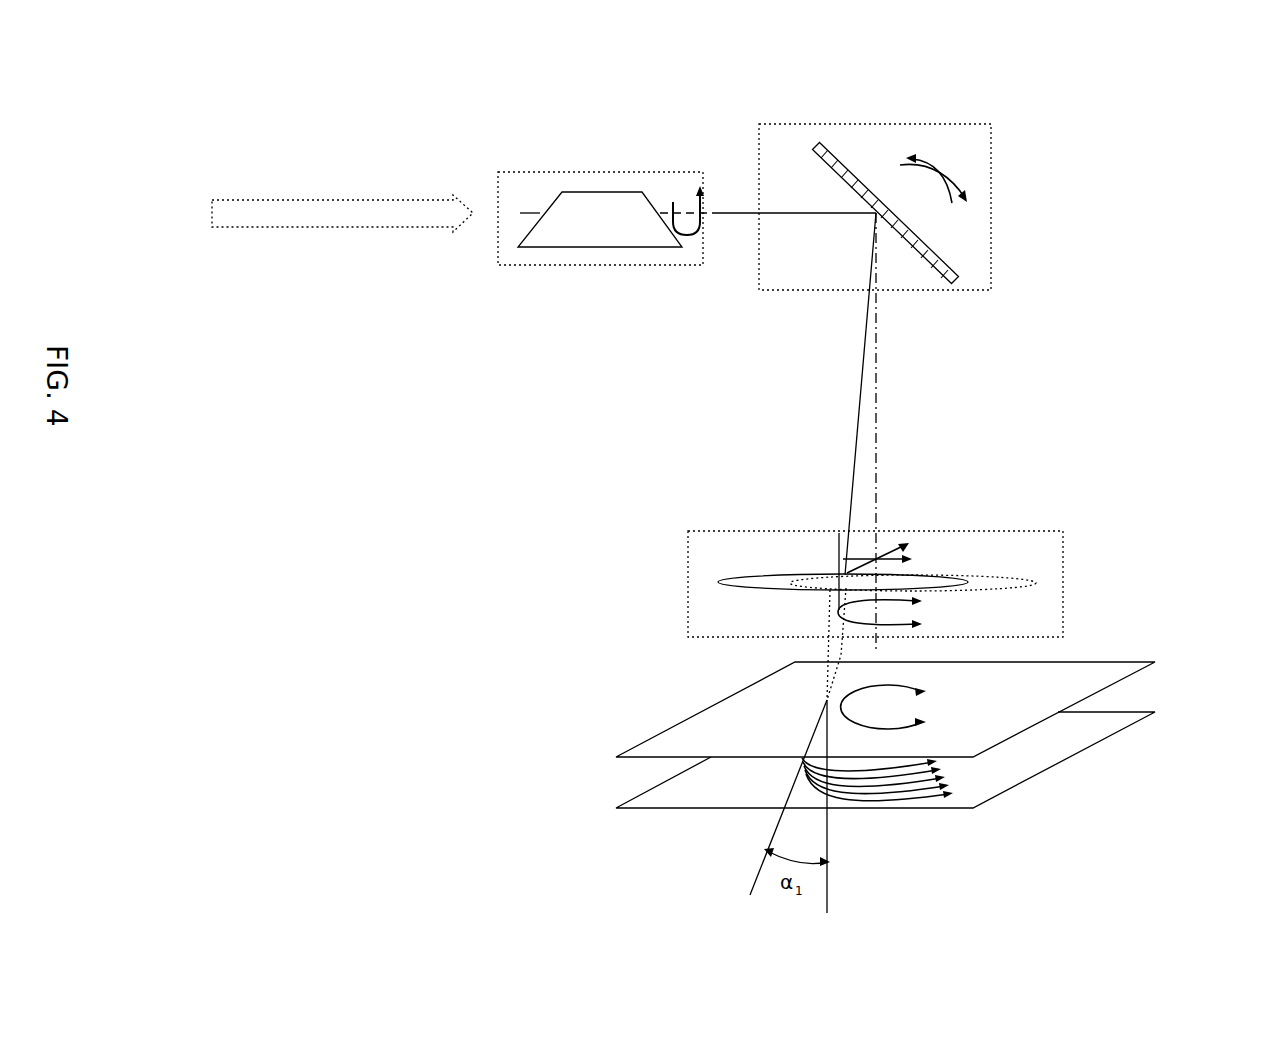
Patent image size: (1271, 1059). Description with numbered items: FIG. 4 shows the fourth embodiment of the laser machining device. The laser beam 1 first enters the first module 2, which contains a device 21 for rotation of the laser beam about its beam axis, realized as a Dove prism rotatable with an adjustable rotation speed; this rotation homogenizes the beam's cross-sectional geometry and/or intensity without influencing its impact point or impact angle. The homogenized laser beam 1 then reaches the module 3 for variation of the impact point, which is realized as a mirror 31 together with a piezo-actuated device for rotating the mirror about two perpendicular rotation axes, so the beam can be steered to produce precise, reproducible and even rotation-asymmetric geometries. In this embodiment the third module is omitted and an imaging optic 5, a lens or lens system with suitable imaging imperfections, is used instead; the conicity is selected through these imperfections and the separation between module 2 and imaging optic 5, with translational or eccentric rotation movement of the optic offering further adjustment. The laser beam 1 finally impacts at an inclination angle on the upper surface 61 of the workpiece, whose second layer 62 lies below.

The laser beam 1 is at (337, 185).
The first module 2 is at (601, 151).
The device for rotation of the laser beam 21 is at (597, 212).
The module for variation of the impact point 3 is at (875, 163).
The mirror 31 is at (862, 168).
The imaging optic 5 is at (1063, 577).
The upper surface 61 is at (1130, 677).
The second layer 62 is at (1117, 733).